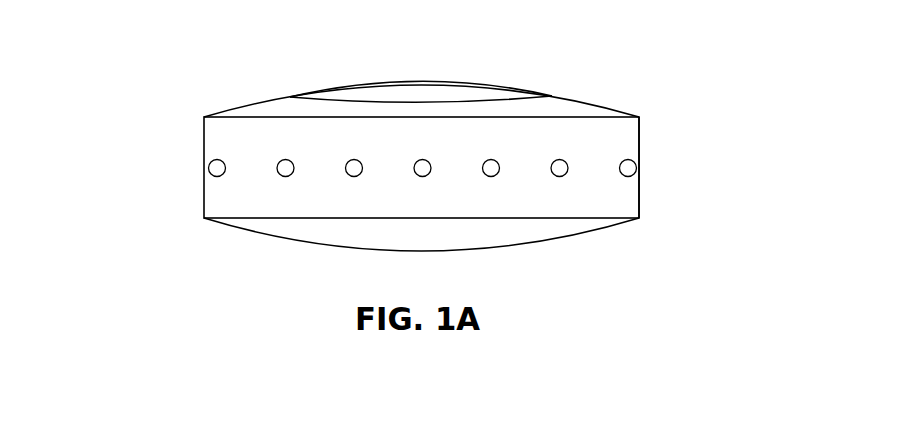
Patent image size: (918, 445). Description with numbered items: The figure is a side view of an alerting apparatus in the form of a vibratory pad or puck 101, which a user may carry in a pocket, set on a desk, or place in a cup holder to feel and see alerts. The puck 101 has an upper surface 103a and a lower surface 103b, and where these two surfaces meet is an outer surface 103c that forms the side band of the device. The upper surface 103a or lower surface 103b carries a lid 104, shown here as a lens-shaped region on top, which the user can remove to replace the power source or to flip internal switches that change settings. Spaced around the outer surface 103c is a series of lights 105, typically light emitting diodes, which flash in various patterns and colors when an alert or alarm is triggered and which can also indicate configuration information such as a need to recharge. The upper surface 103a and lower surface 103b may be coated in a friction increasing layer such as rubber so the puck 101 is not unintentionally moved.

The puck 101 is at (396, 148).
The upper surface 103a is at (259, 102).
The lower surface 103b is at (295, 242).
The outer surface 103c is at (555, 207).
The lid 104 is at (420, 85).
The series of lights 105 is at (673, 163).